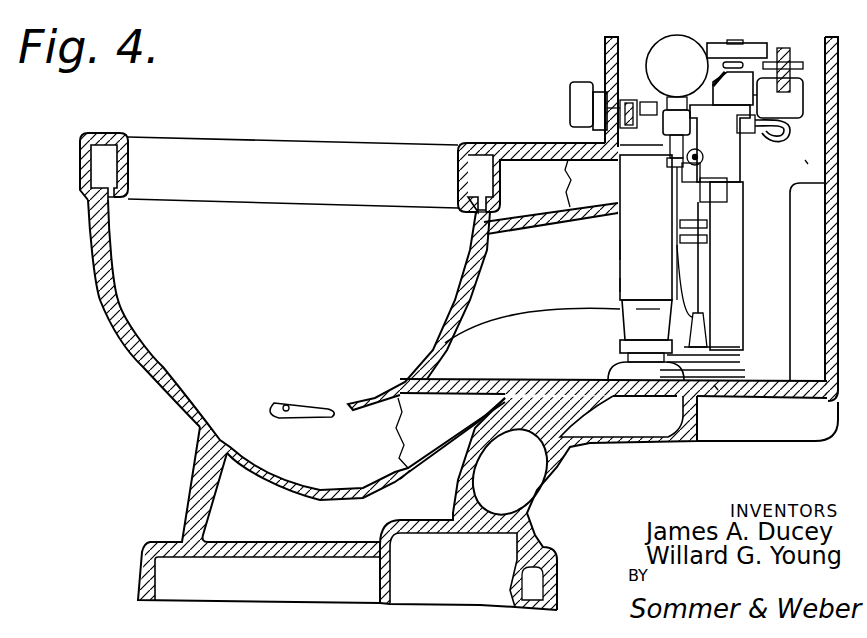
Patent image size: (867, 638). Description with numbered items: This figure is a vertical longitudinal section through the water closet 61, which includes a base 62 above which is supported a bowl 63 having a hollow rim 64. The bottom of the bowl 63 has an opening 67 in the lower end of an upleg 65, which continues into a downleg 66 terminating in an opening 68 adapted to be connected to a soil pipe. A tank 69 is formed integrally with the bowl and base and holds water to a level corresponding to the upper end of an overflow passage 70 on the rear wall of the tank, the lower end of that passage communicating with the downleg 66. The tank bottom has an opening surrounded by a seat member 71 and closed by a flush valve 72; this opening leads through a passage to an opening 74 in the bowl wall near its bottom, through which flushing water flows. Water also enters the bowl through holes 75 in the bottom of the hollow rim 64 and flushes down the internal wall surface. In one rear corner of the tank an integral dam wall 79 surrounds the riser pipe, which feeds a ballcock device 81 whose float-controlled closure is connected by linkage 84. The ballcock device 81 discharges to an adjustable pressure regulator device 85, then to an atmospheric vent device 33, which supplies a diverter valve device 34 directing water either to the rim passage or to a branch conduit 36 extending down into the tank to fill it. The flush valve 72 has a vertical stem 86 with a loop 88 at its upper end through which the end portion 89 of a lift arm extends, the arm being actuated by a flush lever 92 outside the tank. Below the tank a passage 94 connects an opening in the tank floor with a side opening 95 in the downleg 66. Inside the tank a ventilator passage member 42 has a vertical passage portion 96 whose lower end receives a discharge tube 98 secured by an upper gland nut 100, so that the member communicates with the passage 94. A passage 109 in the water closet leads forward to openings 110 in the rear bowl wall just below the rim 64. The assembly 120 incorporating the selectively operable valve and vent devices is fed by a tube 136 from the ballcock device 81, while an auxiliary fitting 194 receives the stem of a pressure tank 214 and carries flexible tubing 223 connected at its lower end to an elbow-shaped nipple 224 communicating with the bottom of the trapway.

The atmospheric vent device 33 is at (768, 44).
The diverter valve device 34 is at (733, 169).
The branch conduit 36 is at (722, 271).
The ventilator passage member 42 is at (616, 251).
The water closet 61 is at (516, 109).
The base 62 is at (147, 552).
The bowl 63 is at (105, 297).
The hollow rim 64 is at (80, 156).
The upleg 65 is at (525, 323).
The downleg 66 is at (534, 541).
The opening 67 is at (346, 404).
The opening 68 is at (480, 606).
The tank 69 is at (829, 292).
The overflow passage 70 is at (806, 234).
The seat member 71 is at (716, 389).
The flush valve 72 is at (728, 365).
The opening 74 is at (287, 406).
The holes 75 is at (113, 202).
The dam wall 79 is at (806, 163).
The ballcock device 81 is at (812, 97).
The linkage 84 is at (820, 66).
The adjustable pressure regulator device 85 is at (738, 85).
The vertical rod or stem 86 is at (700, 291).
The loop 88 is at (720, 198).
The end portion of lift arm 89 is at (736, 183).
The flush lever 92 is at (575, 91).
The passage 94 is at (614, 425).
The side opening 95 is at (540, 499).
The vertical passage portion 96 is at (624, 285).
The discharge tube 98 is at (624, 323).
The upper gland nut 100 is at (622, 346).
The passage 109 is at (534, 219).
The openings 110 is at (478, 225).
The assembly 120 is at (702, 40).
The tube 136 is at (772, 137).
The auxiliary fitting 194 is at (661, 136).
The pressure tank 214 is at (670, 40).
The flexible tubing 223 is at (672, 209).
The elbow-shaped nipple 224 is at (648, 319).